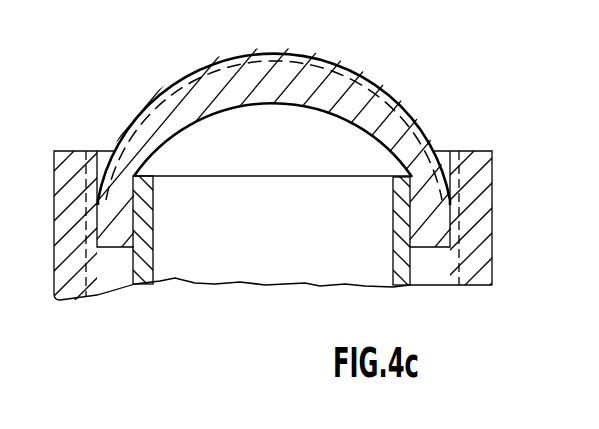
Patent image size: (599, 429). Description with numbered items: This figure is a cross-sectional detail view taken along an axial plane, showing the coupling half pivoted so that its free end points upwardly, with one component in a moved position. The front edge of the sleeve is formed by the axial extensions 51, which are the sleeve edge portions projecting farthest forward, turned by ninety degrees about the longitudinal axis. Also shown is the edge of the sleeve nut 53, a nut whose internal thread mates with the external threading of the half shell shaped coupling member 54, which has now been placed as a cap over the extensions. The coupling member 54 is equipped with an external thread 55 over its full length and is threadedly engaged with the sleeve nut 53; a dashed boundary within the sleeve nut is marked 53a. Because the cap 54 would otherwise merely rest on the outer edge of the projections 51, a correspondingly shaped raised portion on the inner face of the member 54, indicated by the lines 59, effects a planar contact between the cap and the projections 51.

The coupling member 54 is at (345, 88).
The external thread 55 is at (395, 110).
The lines indicating raised portion 59 is at (194, 126).
The axial extensions 51 is at (402, 208).
The sleeve nut 53 is at (478, 232).
The housing insert 53a is at (457, 180).